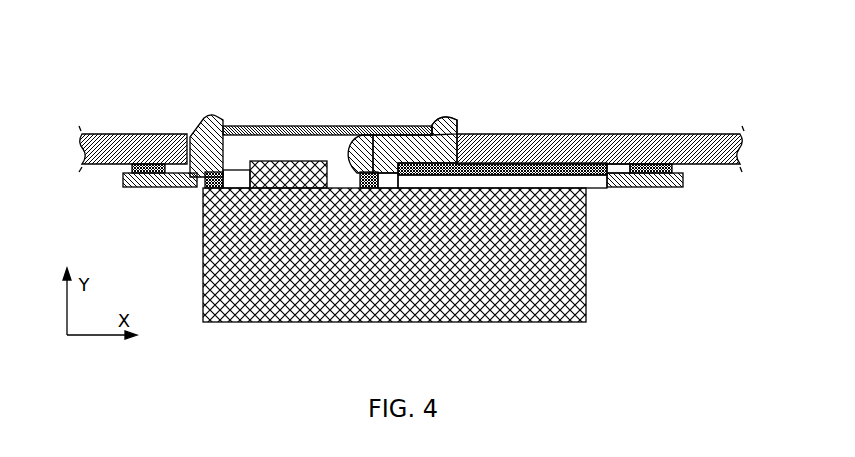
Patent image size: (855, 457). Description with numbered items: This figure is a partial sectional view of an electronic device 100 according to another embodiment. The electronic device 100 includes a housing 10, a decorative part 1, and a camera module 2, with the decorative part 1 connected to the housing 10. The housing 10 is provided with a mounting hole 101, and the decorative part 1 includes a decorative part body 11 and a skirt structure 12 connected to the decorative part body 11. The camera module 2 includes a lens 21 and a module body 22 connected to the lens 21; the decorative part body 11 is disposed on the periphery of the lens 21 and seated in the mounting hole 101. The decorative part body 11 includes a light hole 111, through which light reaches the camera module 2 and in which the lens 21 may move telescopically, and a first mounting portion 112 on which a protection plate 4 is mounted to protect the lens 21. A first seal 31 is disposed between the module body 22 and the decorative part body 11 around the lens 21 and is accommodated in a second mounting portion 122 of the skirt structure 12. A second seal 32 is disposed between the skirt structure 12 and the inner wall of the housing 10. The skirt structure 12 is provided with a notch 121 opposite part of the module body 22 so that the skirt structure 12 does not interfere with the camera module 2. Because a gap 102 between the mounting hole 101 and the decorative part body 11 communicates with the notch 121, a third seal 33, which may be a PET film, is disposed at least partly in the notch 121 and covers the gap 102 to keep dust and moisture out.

The electronic device 100 is at (339, 41).
The housing 10 is at (411, 129).
The mounting hole 101 is at (457, 133).
The gap 102 is at (187, 133).
The decorative part 1 is at (385, 150).
The decorative part body 11 is at (228, 123).
The light hole 111 is at (256, 150).
The first mounting portion 112 is at (434, 122).
The skirt structure 12 is at (385, 153).
The notch 121 is at (593, 184).
The second mounting portion 122 is at (385, 133).
The camera module 2 is at (397, 204).
The lens 21 is at (313, 160).
The module body 22 is at (587, 233).
The first seal 31 is at (198, 188).
The second seal 32 is at (121, 174).
The third seal 33 is at (626, 170).
The protection plate 4 is at (282, 127).